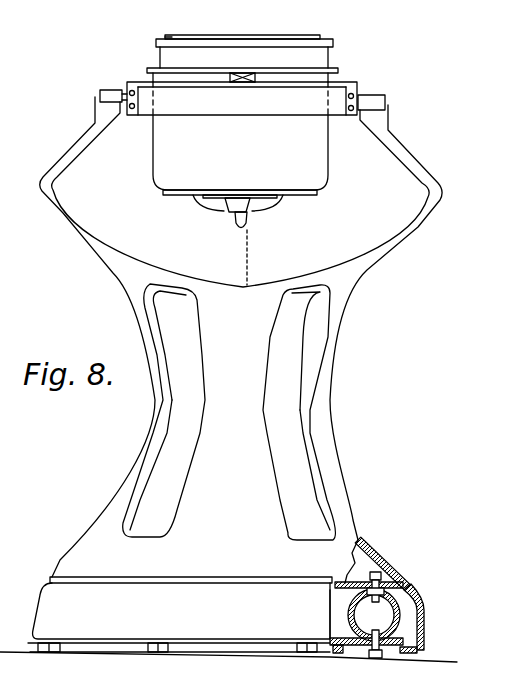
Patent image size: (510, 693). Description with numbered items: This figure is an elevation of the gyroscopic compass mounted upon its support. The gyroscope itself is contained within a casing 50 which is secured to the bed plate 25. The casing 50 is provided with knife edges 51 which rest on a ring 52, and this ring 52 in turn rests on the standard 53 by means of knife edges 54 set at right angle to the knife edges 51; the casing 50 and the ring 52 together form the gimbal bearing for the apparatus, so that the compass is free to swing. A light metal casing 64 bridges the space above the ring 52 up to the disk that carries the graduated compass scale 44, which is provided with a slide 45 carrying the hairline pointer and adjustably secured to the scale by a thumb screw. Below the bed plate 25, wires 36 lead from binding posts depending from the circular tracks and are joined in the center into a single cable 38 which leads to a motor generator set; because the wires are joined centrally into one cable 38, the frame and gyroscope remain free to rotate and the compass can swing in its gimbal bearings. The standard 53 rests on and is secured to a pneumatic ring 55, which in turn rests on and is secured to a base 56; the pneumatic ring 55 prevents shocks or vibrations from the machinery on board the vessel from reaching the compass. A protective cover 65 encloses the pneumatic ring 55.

The bed plate 25 is at (317, 195).
The wires 36 is at (197, 197).
The cable 38 is at (250, 257).
The graduated compass scale 44 is at (235, 33).
The slide 45 is at (168, 35).
The casing 50 is at (240, 136).
The knife edges 51 is at (233, 80).
The ring 52 is at (242, 98).
The standard 53 is at (241, 373).
The knife edges 54 is at (108, 90).
The pneumatic ring 55 is at (370, 613).
The base 56 is at (340, 648).
The light metal casing 64 is at (242, 60).
The protective cover 65 is at (228, 619).